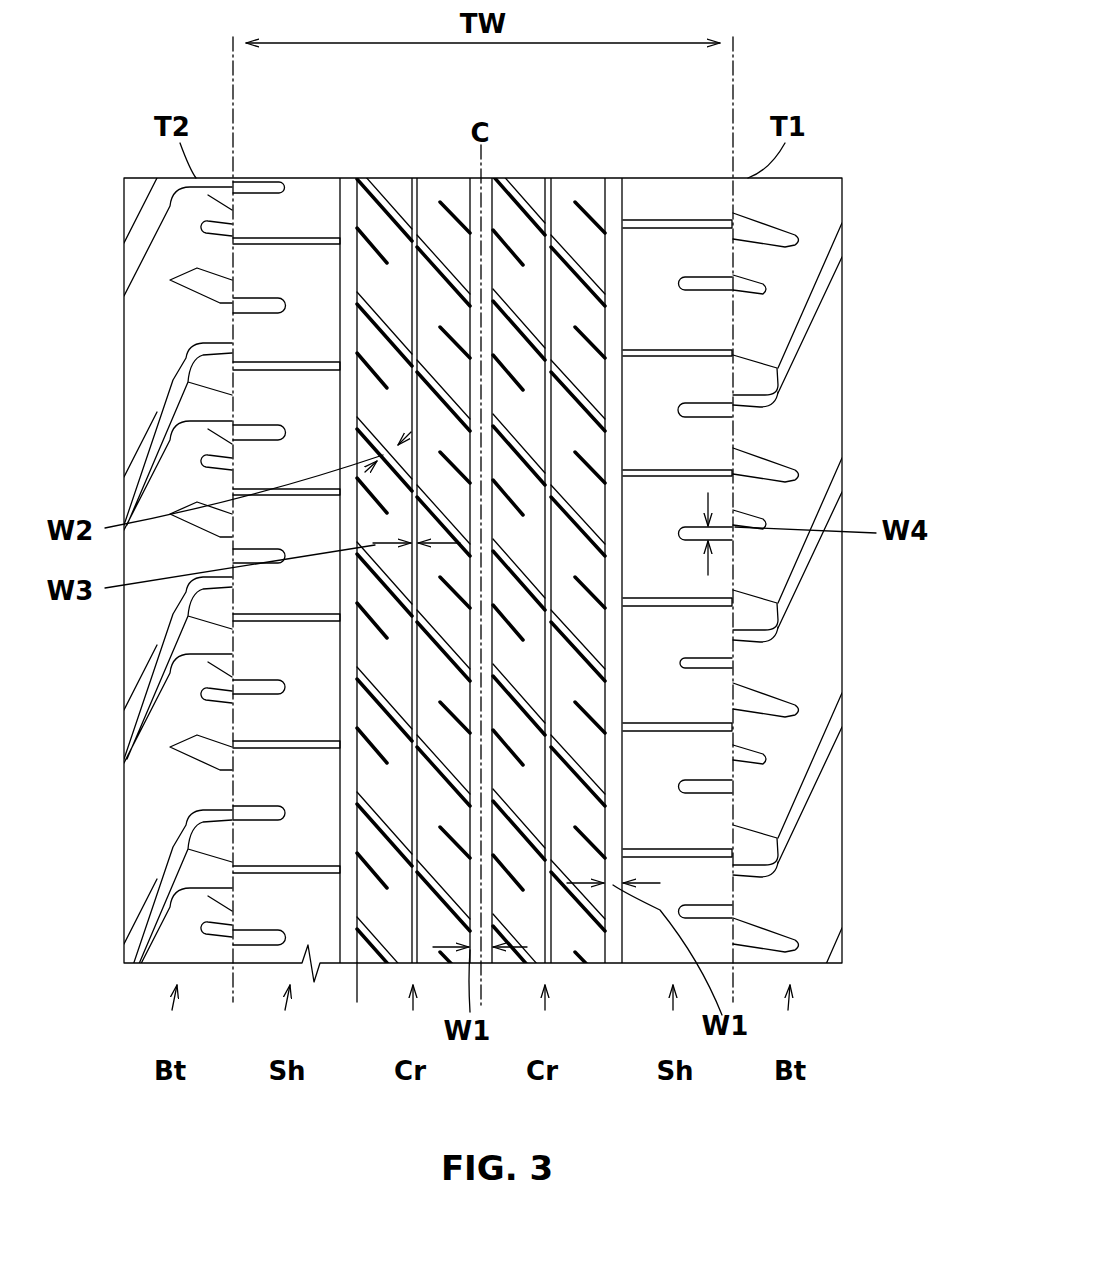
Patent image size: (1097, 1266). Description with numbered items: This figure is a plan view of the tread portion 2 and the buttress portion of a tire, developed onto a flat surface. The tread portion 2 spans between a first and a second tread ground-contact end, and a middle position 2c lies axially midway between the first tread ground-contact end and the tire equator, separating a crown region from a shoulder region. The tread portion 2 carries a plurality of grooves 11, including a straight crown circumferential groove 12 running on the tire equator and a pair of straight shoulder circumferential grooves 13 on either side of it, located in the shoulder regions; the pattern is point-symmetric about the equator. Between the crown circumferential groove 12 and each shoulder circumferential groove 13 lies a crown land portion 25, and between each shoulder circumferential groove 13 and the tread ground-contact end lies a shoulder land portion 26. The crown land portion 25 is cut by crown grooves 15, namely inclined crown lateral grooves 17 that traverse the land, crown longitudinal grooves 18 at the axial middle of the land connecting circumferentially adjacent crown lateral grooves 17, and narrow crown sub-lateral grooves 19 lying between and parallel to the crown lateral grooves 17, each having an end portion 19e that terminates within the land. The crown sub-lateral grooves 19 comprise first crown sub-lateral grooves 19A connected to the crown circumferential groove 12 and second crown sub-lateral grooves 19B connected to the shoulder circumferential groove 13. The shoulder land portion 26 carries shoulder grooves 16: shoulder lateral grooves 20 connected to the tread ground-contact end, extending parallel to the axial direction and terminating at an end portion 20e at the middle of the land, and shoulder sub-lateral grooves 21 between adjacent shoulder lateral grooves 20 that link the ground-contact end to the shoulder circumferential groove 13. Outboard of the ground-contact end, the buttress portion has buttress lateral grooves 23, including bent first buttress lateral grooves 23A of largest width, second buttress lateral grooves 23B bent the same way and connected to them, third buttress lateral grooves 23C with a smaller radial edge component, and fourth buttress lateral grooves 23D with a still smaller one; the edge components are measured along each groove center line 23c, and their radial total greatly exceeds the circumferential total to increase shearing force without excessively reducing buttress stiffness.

The tread portion 2 is at (752, 92).
The middle position 2c is at (357, 178).
The grooves 11 is at (612, 975).
The crown circumferential groove 12 is at (494, 178).
The shoulder circumferential groove 13 is at (345, 178).
The crown grooves 15 is at (360, 318).
The shoulder grooves 16 is at (205, 465).
The crown lateral groove 17 is at (393, 178).
The crown longitudinal groove 18 is at (430, 178).
The crown sub-lateral groove 19 is at (380, 268).
The end portion 19e is at (390, 384).
The first crown sub-lateral groove 19A is at (505, 366).
The second crown sub-lateral groove 19B is at (590, 470).
The shoulder lateral groove 20 is at (712, 266).
The end portion 20e is at (730, 540).
The shoulder sub-lateral groove 21 is at (683, 352).
The buttress lateral grooves 23 is at (878, 296).
The first buttress lateral groove 23A is at (800, 793).
The second buttress lateral groove 23B is at (780, 859).
The third buttress lateral groove 23C is at (767, 690).
The fourth buttress lateral groove 23D is at (763, 748).
The groove center line 23c is at (760, 940).
The crown land portion 25 is at (560, 178).
The shoulder land portion 26 is at (699, 204).